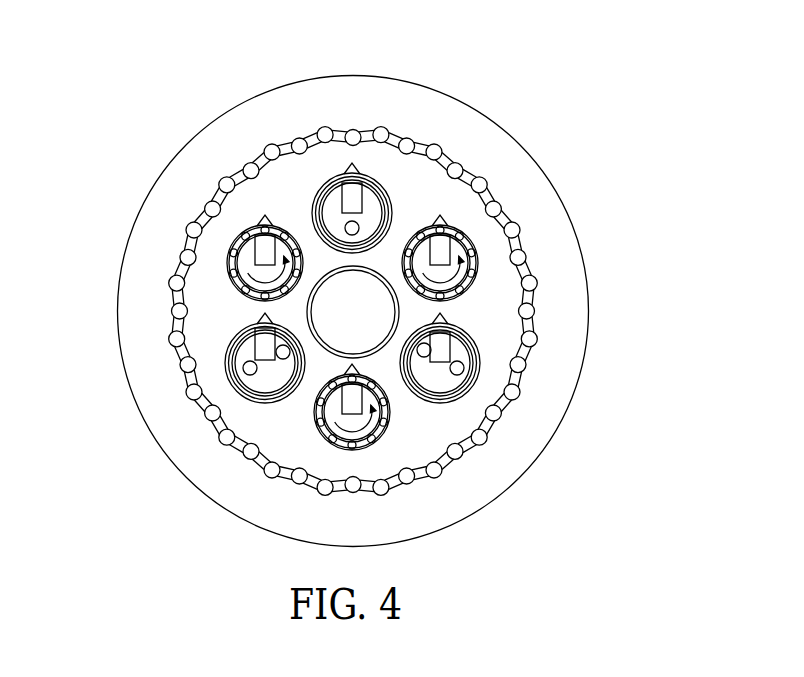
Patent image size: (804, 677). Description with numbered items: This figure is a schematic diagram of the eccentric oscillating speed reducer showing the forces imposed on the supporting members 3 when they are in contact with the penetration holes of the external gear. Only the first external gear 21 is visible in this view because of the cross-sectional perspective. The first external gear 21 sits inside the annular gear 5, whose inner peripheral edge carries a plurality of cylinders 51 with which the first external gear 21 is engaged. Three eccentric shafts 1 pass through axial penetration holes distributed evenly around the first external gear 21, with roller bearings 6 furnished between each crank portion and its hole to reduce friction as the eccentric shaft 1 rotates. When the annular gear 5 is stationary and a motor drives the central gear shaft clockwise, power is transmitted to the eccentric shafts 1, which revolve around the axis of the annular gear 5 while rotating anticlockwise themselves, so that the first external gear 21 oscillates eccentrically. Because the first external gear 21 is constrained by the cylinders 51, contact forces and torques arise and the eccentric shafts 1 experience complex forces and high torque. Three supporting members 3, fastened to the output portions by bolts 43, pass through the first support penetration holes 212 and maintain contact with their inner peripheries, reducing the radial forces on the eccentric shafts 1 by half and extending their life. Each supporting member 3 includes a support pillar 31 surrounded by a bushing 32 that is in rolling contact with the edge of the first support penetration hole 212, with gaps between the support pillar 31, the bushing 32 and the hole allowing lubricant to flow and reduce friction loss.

The eccentric shaft 1 is at (170, 251).
The supporting member 3 is at (554, 67).
The annular gear 5 is at (258, 108).
The roller bearing 6 is at (184, 235).
The first external gear 21 is at (352, 94).
The support pillar 31 is at (424, 134).
The bushing 32 is at (428, 152).
The bolt 43 is at (147, 376).
The cylinder 51 is at (242, 162).
The first support penetration hole 212 is at (170, 383).